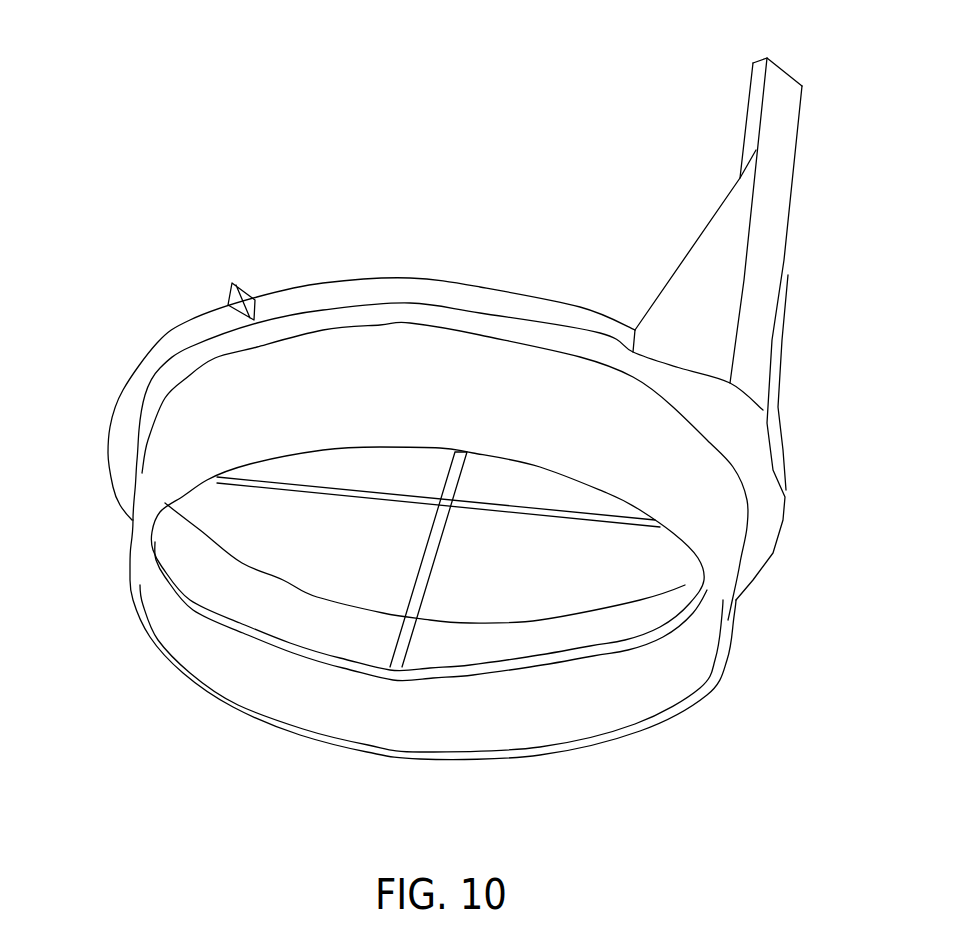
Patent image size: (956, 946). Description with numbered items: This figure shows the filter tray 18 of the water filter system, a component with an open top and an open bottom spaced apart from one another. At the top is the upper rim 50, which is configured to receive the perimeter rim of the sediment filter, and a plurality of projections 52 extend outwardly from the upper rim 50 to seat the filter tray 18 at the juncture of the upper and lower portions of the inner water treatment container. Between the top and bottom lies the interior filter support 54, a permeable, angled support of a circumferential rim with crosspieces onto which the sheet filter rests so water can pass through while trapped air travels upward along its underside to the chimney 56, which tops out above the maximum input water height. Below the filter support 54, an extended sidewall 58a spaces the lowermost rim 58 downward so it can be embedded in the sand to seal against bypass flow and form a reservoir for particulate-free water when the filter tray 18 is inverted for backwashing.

The filter tray 18 is at (440, 120).
The upper rim 50 is at (345, 297).
The projections 52 is at (228, 298).
The interior filter support 54 is at (417, 513).
The chimney 56 is at (811, 187).
The lowermost rim 58 is at (707, 688).
The extended sidewall 58a is at (565, 703).